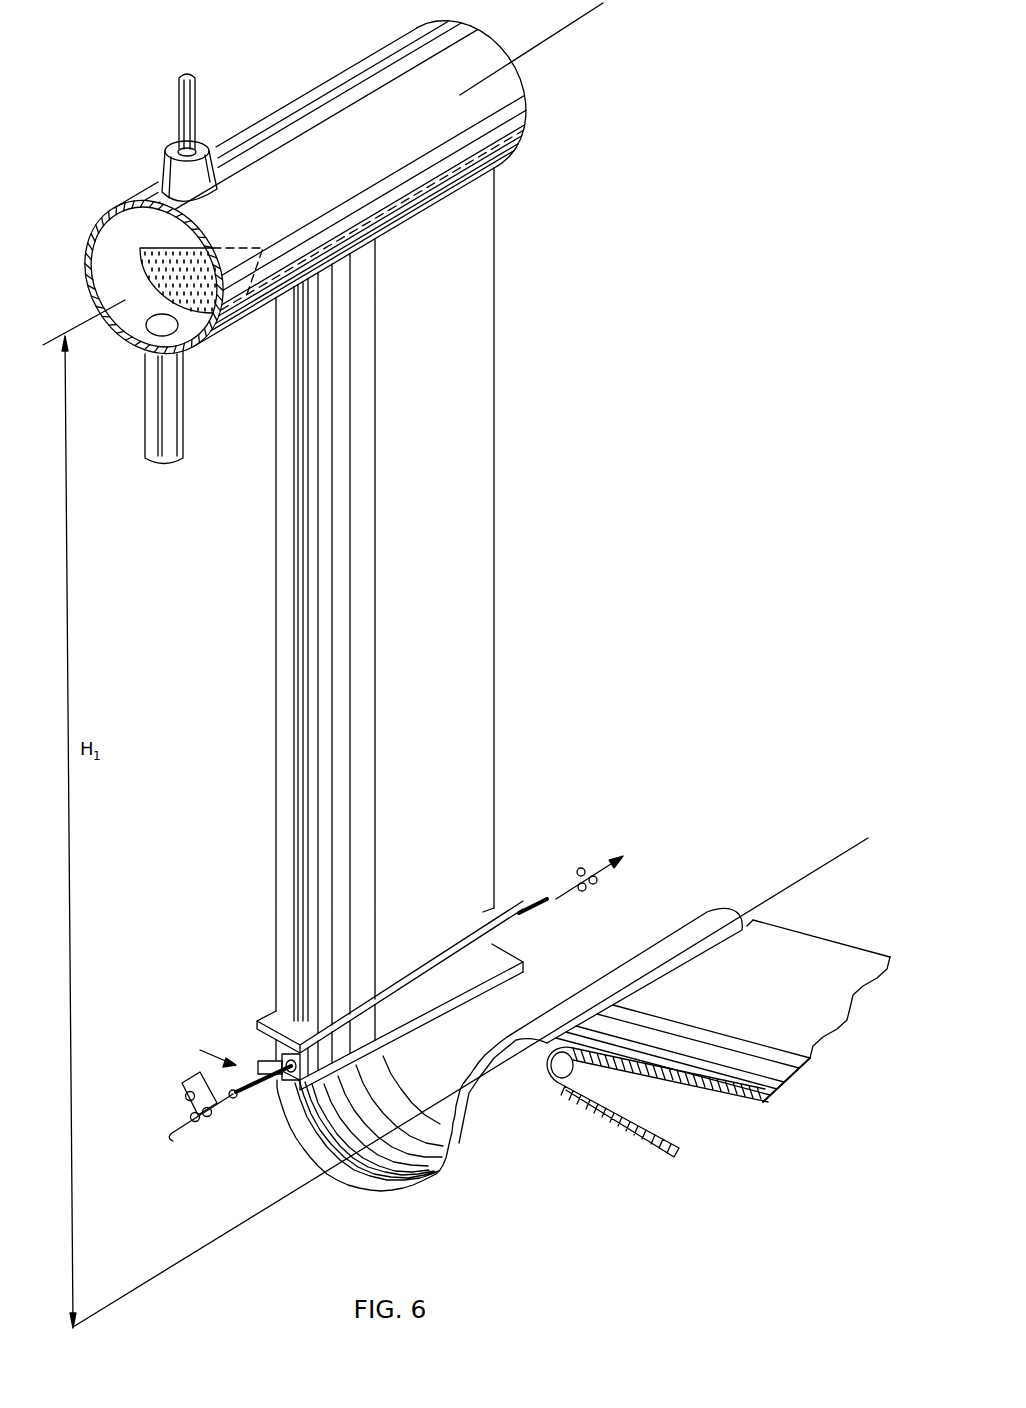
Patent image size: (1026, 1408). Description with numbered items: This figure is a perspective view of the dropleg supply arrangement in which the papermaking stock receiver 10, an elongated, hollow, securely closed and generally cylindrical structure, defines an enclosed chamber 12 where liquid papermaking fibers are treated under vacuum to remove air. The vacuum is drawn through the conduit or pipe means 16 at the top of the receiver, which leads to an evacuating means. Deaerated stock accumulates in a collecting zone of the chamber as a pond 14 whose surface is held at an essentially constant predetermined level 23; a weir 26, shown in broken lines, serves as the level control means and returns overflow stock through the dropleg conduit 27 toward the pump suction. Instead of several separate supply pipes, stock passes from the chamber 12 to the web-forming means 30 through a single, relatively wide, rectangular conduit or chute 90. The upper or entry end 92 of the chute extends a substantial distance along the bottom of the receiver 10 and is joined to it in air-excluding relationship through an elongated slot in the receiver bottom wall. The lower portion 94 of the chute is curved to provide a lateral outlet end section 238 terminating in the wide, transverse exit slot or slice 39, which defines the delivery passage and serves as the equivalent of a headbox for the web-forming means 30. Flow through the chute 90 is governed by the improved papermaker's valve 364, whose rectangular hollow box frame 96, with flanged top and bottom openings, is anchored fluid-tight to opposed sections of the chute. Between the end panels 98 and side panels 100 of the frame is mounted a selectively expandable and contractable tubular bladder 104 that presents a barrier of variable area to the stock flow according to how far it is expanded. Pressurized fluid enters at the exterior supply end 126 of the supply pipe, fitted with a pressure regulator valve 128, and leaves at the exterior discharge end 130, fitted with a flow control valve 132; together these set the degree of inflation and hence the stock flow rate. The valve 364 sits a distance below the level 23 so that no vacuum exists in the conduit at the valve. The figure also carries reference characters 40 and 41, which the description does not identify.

The papermaking stock receiver 10 is at (293, 100).
The enclosed chamber 12 is at (107, 248).
The pond of deaerated papermaking stock 14 is at (168, 239).
The conduit or pipe means 16 is at (197, 97).
The predetermined level 23 is at (58, 330).
The weir 26 is at (166, 238).
The dropleg conduit 27 is at (147, 440).
The web-forming means 30 is at (753, 919).
The exit slot or slice 39 is at (533, 1050).
The plate 40 is at (833, 938).
The ground line 41 is at (188, 1258).
The supply conduit or chute 90 is at (497, 408).
The upper or entry end 92 is at (440, 193).
The lower portion 94 is at (425, 1058).
The box frame 96 is at (275, 1012).
The end panels 98 is at (283, 1095).
The side panels 100 is at (473, 960).
The bladder 104 is at (282, 1055).
The exterior supply end 126 is at (242, 1099).
The pressure regulator valve 128 is at (190, 1108).
The exterior discharge end 130 is at (550, 911).
The flow control valve 132 is at (580, 868).
The lateral outlet end section 238 is at (718, 925).
The papermaker's valve 364 is at (197, 1054).